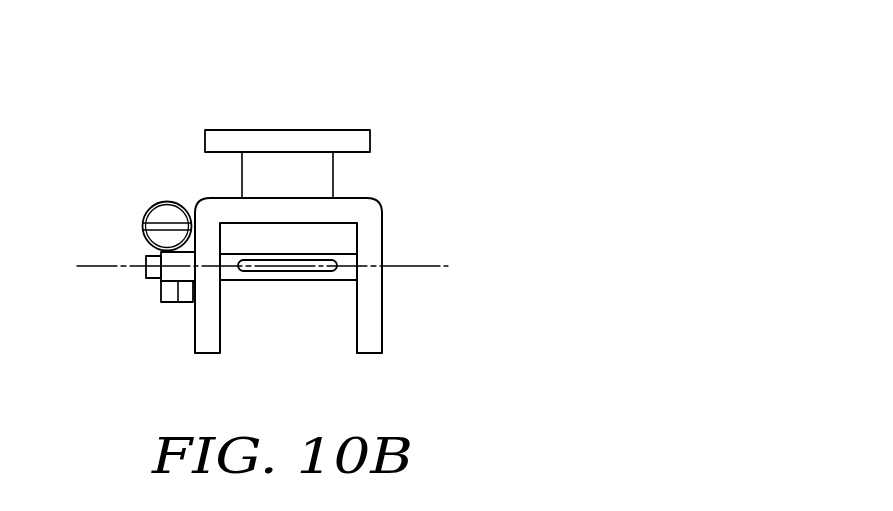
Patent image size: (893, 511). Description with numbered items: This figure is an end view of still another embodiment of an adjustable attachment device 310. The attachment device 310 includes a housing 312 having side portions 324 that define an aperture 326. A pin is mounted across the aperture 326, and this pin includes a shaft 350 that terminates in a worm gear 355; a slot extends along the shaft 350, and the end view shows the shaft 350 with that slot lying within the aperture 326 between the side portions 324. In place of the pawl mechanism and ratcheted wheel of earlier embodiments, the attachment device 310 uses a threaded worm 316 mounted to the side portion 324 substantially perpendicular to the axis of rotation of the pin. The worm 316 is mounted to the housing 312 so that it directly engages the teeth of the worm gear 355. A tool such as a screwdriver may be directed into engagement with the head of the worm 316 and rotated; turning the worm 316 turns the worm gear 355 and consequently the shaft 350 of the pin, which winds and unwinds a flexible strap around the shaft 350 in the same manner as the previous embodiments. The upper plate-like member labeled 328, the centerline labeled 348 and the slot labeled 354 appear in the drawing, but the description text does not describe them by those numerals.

The adjustable attachment device 310 is at (390, 130).
The housing 312 is at (387, 222).
The threaded worm 316 is at (138, 212).
The side portion 324 is at (385, 318).
The aperture 326 is at (355, 315).
The top plate 328 is at (263, 130).
The axis centerline 348 is at (112, 268).
The shaft 350 is at (265, 282).
The slot 354 is at (290, 272).
The worm gear 355 is at (178, 302).